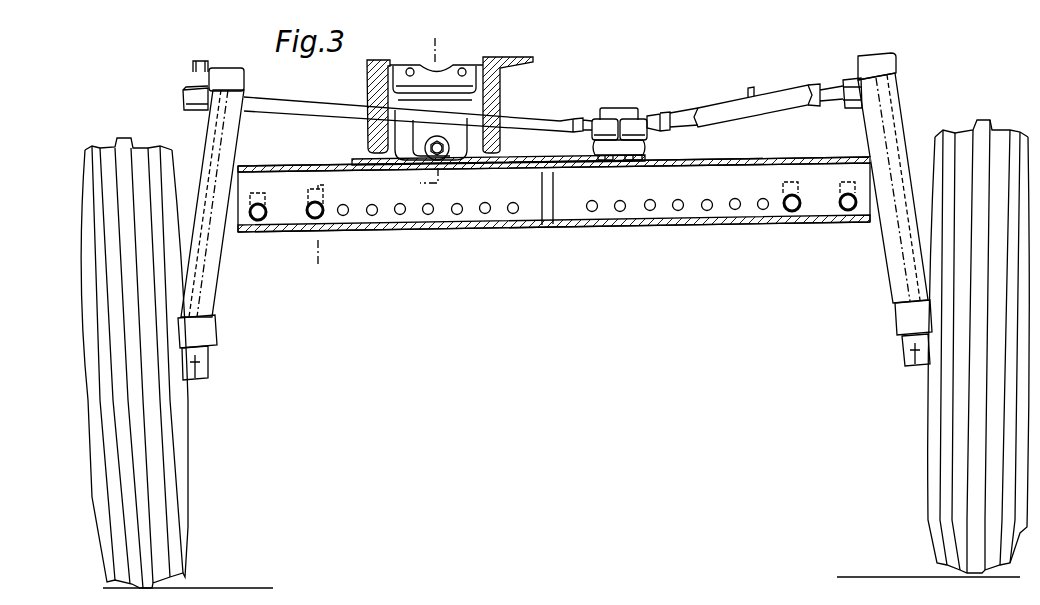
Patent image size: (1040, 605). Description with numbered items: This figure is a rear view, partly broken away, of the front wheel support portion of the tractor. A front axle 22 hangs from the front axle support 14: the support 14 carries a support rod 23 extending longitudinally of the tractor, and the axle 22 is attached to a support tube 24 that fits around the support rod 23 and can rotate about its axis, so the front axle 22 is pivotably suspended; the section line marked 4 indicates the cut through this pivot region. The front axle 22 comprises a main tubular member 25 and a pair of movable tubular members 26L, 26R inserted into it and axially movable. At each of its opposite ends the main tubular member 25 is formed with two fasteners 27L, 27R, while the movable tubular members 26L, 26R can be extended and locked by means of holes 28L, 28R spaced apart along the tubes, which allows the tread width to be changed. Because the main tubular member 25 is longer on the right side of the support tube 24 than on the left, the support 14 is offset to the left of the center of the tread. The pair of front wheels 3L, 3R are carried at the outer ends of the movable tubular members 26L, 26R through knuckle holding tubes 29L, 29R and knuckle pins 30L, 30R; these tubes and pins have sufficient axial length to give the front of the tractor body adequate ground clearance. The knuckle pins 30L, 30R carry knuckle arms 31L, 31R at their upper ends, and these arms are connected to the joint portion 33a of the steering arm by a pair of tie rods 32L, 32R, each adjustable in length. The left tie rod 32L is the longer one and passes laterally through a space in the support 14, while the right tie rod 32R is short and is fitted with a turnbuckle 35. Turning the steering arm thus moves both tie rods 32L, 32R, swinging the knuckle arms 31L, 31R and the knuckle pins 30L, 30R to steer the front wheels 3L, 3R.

The left front wheel 3L is at (123, 137).
The right front wheel 3R is at (965, 135).
The section line 4- 4 is at (437, 48).
The front axle support 14 is at (492, 95).
The front axle 22 is at (573, 228).
The support rod 23 is at (420, 147).
The support tube 24 is at (450, 147).
The main tubular member 25 is at (513, 228).
The left movable tubular member 26L is at (390, 220).
The right movable tubular member 26R is at (743, 212).
The fasteners 27L is at (259, 221).
The fasteners 27R is at (794, 209).
The holes 28L is at (429, 213).
The holes 28R is at (651, 208).
The left knuckle holding tube 29L is at (215, 282).
The right knuckle holding tube 29R is at (890, 243).
The left knuckle pin 30L is at (233, 142).
The right knuckle pin 30R is at (880, 135).
The left knuckle arm 31L is at (197, 80).
The right knuckle arm 31R is at (895, 62).
The left tie rod 32L is at (313, 107).
The right tie rod 32R is at (830, 85).
The joint portion 33a is at (643, 147).
The turnbuckle 35 is at (720, 108).